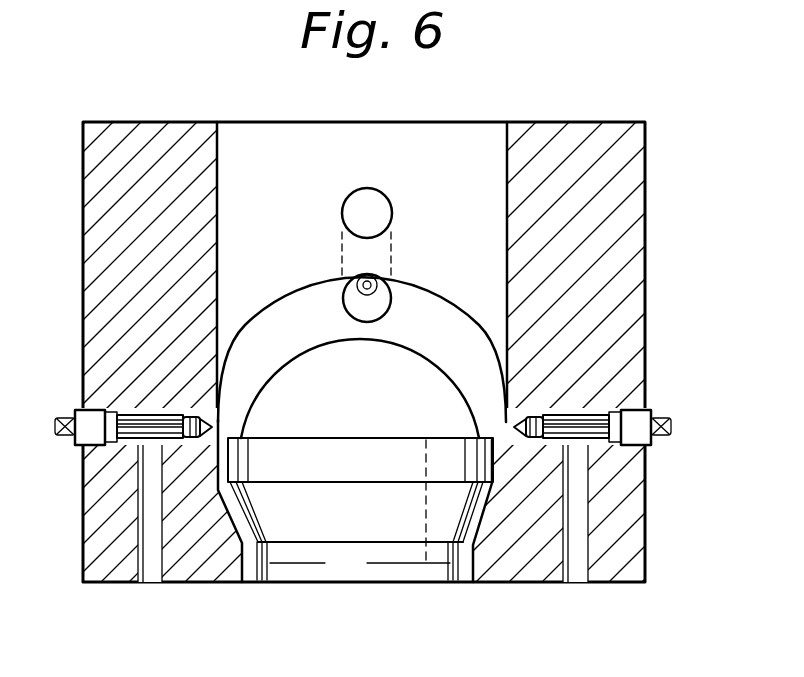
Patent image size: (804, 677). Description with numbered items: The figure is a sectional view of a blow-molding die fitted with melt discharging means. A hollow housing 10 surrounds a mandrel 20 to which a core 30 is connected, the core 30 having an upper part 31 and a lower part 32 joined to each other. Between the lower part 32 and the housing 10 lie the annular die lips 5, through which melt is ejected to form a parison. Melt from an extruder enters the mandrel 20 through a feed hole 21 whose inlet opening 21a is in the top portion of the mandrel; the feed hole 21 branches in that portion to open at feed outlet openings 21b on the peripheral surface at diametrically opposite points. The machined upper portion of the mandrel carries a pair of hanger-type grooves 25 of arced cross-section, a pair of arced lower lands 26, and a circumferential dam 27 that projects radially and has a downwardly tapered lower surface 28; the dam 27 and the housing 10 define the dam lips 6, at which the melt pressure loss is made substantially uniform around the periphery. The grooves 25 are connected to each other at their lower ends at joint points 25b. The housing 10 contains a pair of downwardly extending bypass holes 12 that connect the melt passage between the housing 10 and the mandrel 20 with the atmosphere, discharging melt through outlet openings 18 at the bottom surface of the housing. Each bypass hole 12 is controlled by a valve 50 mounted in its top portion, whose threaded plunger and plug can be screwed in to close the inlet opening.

The housing 10 is at (632, 201).
The mandrel 20 is at (480, 137).
The second pair of bypass holes 12 is at (137, 511).
The valve 50 is at (357, 279).
The inlet opening 21a is at (386, 192).
The feed hole 21 is at (395, 251).
The feed outlet opening 21b is at (381, 309).
The groove 25 is at (334, 336).
The lower land 26 is at (388, 418).
The dam 27 is at (388, 473).
The lower surface 28 is at (390, 528).
The core 30 is at (368, 572).
The upper part 31 is at (276, 553).
The lower part 32 is at (388, 583).
The die lips 5 is at (473, 585).
The dam lips 6 is at (485, 440).
The outlet opening 18 is at (588, 583).
The joint point 25b is at (206, 440).